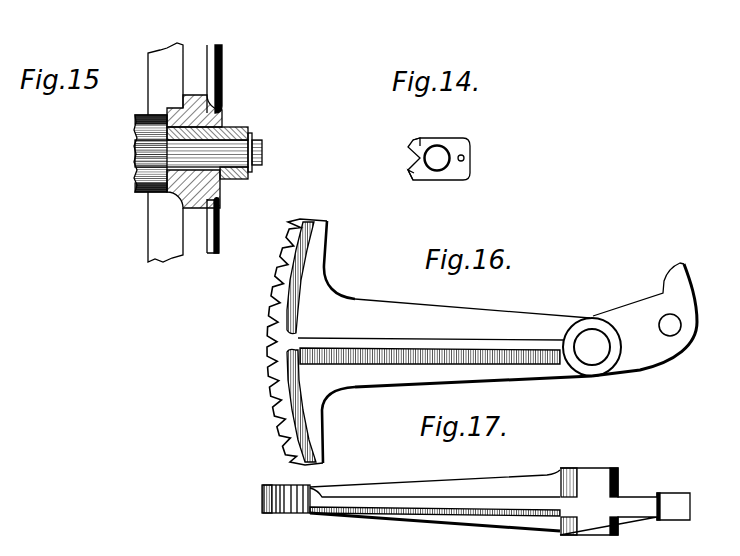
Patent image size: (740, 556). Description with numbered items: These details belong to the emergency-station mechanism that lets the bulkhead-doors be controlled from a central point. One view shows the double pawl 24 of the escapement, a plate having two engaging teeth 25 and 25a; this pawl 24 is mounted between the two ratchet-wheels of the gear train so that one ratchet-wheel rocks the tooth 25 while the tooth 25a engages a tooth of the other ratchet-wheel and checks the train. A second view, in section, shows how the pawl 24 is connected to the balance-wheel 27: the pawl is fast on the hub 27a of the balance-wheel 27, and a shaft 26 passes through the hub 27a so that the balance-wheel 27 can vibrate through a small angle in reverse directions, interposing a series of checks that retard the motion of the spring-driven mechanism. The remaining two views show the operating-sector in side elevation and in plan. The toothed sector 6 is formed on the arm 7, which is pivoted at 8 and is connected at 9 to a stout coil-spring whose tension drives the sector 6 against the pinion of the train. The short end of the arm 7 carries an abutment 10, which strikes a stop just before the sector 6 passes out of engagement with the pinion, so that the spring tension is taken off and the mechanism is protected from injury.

In FIG. 16, the toothed sector 6 is at (270, 341).
In FIG. 17, the toothed sector 6 is at (268, 497).
In FIG. 16, the arm 7 is at (403, 318).
In FIG. 17, the arm 7 is at (471, 480).
In FIG. 16, the pivot 8 is at (588, 334).
In FIG. 17, the pivot 8 is at (618, 468).
In FIG. 16, the spring connection 9 is at (662, 322).
In FIG. 16, the abutment 10 is at (681, 268).
In FIG. 17, the abutment 10 is at (671, 496).
In FIG. 15, the double pawl 24 is at (243, 185).
In FIG. 14, the double pawl 24 is at (463, 139).
In FIG. 14, the engaging tooth 25 is at (411, 179).
In FIG. 14, the engaging tooth 25a is at (421, 137).
In FIG. 15, the shaft 26 is at (147, 152).
In FIG. 15, the balance-wheel 27 is at (191, 57).
In FIG. 15, the hub of the balance-wheel 27a is at (222, 112).